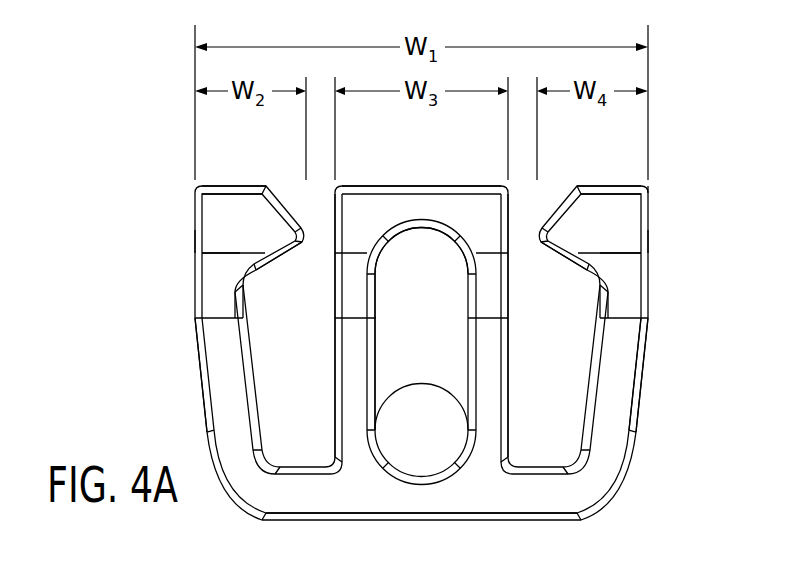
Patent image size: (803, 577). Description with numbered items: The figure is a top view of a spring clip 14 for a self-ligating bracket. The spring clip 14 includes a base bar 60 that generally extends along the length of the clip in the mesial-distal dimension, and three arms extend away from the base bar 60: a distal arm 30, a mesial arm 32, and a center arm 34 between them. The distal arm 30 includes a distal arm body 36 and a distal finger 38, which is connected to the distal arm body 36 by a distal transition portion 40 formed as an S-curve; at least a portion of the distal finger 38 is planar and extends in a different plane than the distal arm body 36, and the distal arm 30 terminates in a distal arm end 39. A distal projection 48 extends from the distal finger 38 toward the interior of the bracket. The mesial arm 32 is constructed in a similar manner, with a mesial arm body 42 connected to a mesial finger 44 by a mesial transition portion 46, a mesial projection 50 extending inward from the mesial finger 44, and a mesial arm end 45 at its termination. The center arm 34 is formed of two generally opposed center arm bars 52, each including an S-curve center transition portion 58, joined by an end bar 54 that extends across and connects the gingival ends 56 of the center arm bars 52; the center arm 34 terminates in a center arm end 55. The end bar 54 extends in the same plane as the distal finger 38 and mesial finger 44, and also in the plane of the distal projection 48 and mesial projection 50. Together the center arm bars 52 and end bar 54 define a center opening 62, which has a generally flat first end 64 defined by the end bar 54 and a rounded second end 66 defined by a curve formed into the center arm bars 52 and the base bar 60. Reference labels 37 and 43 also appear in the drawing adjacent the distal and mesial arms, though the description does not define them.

The spring clip 14 is at (672, 160).
The distal arm 30 is at (172, 346).
The mesial arm 32 is at (664, 410).
The center arm 34 is at (444, 172).
The distal arm body 36 is at (200, 393).
The first hook 37 is at (198, 241).
The distal finger 38 is at (218, 216).
The distal arm end 39 is at (222, 186).
The distal transition portion 40 is at (218, 297).
The mesial arm body 42 is at (613, 432).
The second hook 43 is at (650, 240).
The mesial finger 44 is at (620, 218).
The mesial arm end 45 is at (610, 190).
The mesial transition portion 46 is at (627, 295).
The distal projection 48 is at (280, 227).
The mesial projection 50 is at (563, 230).
The center arm bars 52 is at (352, 384).
The end bar 54 is at (390, 196).
The center arm end 55 is at (420, 196).
The gingival ends 56 is at (353, 196).
The center transition portions 58 is at (353, 302).
The base bar 60 is at (363, 493).
The center opening 62 is at (436, 385).
The first end 64 is at (423, 232).
The second end 66 is at (405, 478).